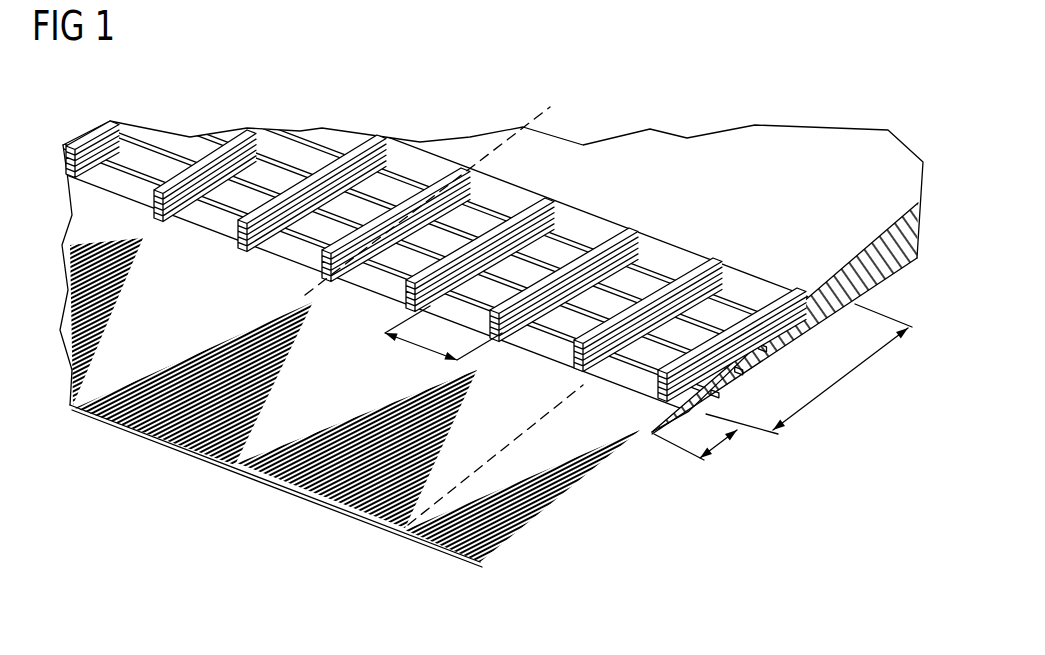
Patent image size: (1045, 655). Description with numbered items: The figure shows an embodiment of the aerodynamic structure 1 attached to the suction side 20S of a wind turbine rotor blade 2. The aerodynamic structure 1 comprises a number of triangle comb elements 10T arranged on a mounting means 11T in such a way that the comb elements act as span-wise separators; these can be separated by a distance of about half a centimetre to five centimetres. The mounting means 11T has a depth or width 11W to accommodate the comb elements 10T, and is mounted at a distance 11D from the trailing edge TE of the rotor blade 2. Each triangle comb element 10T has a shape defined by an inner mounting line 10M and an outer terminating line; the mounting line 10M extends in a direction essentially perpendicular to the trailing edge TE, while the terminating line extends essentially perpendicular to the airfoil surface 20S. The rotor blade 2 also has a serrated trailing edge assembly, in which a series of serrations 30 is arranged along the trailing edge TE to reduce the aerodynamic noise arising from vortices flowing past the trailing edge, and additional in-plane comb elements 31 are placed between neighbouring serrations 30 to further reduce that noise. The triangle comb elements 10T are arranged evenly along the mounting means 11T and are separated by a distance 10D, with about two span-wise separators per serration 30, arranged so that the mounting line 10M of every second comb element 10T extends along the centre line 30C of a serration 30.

The aerodynamic structure 1 is at (704, 100).
The wind turbine rotor blade 2 is at (885, 294).
The triangle comb element 10T is at (241, 210).
The mounting line 10M is at (523, 122).
The distance between comb elements 10D is at (410, 350).
The mounting means 11T is at (748, 288).
The width of mounting means 11W is at (836, 383).
The distance from trailing edge 11D is at (722, 444).
The suction side 20S is at (836, 170).
The serration 30 is at (96, 370).
The centre line of serration 30C is at (493, 452).
The in-plane comb element 31 is at (145, 435).
The trailing edge TE is at (650, 438).